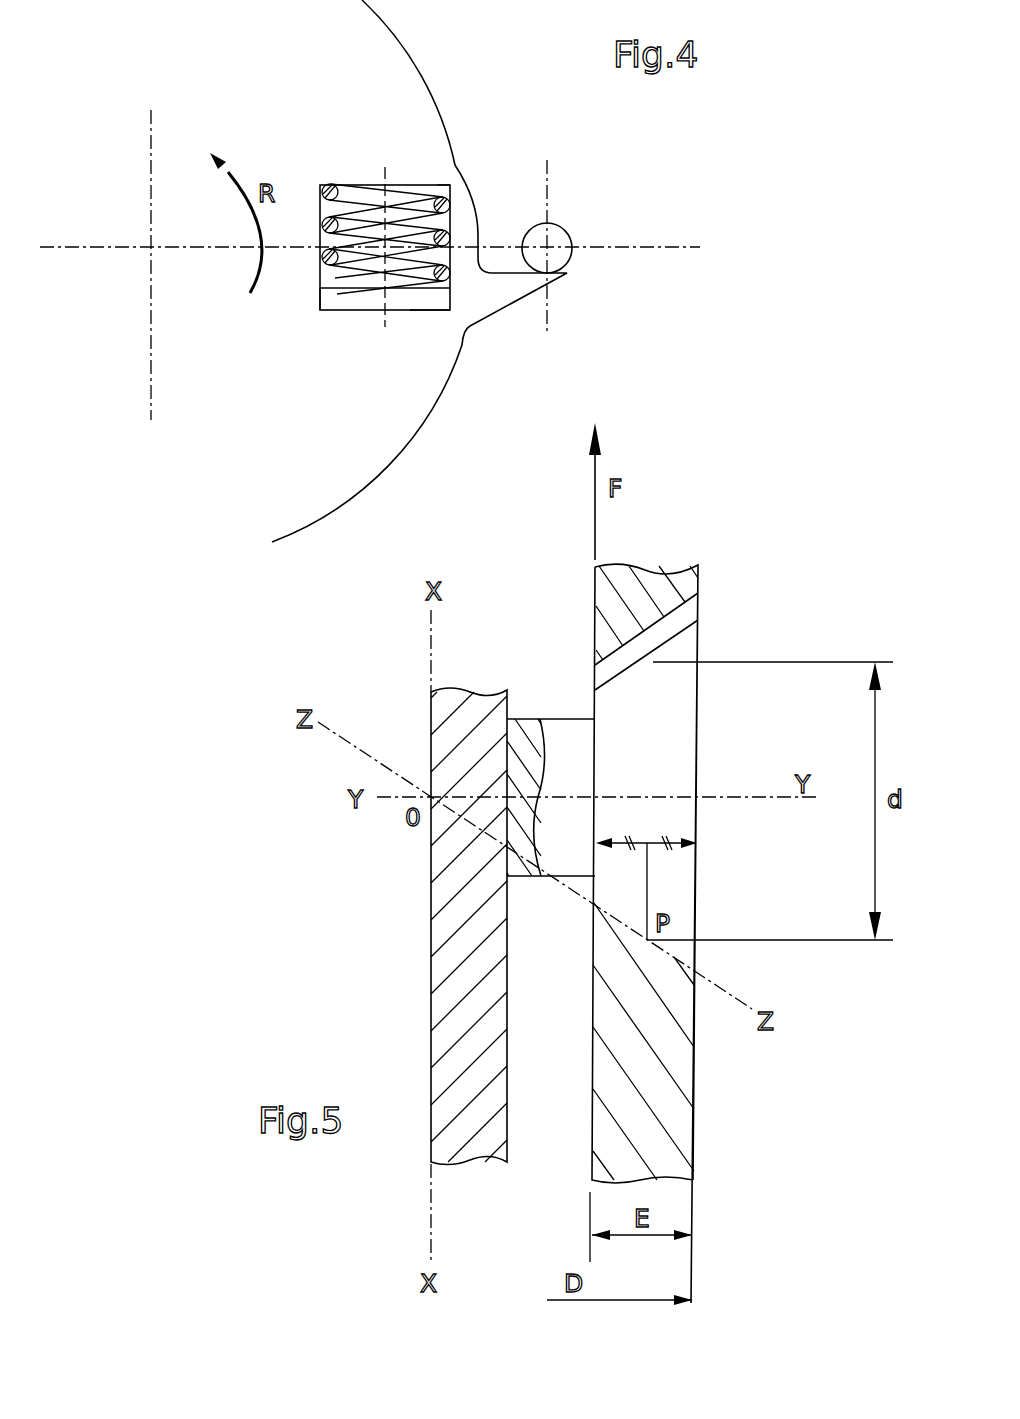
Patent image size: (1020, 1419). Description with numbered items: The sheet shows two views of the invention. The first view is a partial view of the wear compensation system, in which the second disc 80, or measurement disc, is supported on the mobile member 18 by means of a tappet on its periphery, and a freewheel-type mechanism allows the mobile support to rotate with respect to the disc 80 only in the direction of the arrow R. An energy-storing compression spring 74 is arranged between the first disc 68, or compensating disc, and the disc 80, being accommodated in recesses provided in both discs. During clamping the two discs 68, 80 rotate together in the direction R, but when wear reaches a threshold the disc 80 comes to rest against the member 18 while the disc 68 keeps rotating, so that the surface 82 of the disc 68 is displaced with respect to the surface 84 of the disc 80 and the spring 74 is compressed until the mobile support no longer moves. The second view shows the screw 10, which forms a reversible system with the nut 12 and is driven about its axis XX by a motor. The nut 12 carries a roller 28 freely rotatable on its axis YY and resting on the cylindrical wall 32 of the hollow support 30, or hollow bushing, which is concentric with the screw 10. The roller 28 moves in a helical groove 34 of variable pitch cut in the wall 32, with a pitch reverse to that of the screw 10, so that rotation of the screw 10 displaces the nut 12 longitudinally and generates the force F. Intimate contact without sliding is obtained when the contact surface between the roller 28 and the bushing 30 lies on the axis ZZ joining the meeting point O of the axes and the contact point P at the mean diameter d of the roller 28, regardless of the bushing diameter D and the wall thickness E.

In FIG. 5, the screw 10 is at (438, 958).
In FIG. 5, the nut 12 is at (566, 719).
In FIG. 4, the mobile member 18 is at (566, 221).
In FIG. 5, the roller 28 is at (690, 650).
In FIG. 5, the hollow support 30 is at (697, 1162).
In FIG. 5, the wall 32 is at (677, 1118).
In FIG. 5, the helical groove 34 is at (693, 608).
In FIG. 4, the first disc 68 is at (356, 297).
In FIG. 4, the energy-storing spring 74 is at (437, 193).
In FIG. 4, the second disc 80 is at (425, 72).
In FIG. 4, the surface 82 is at (317, 299).
In FIG. 4, the surface 84 is at (425, 311).